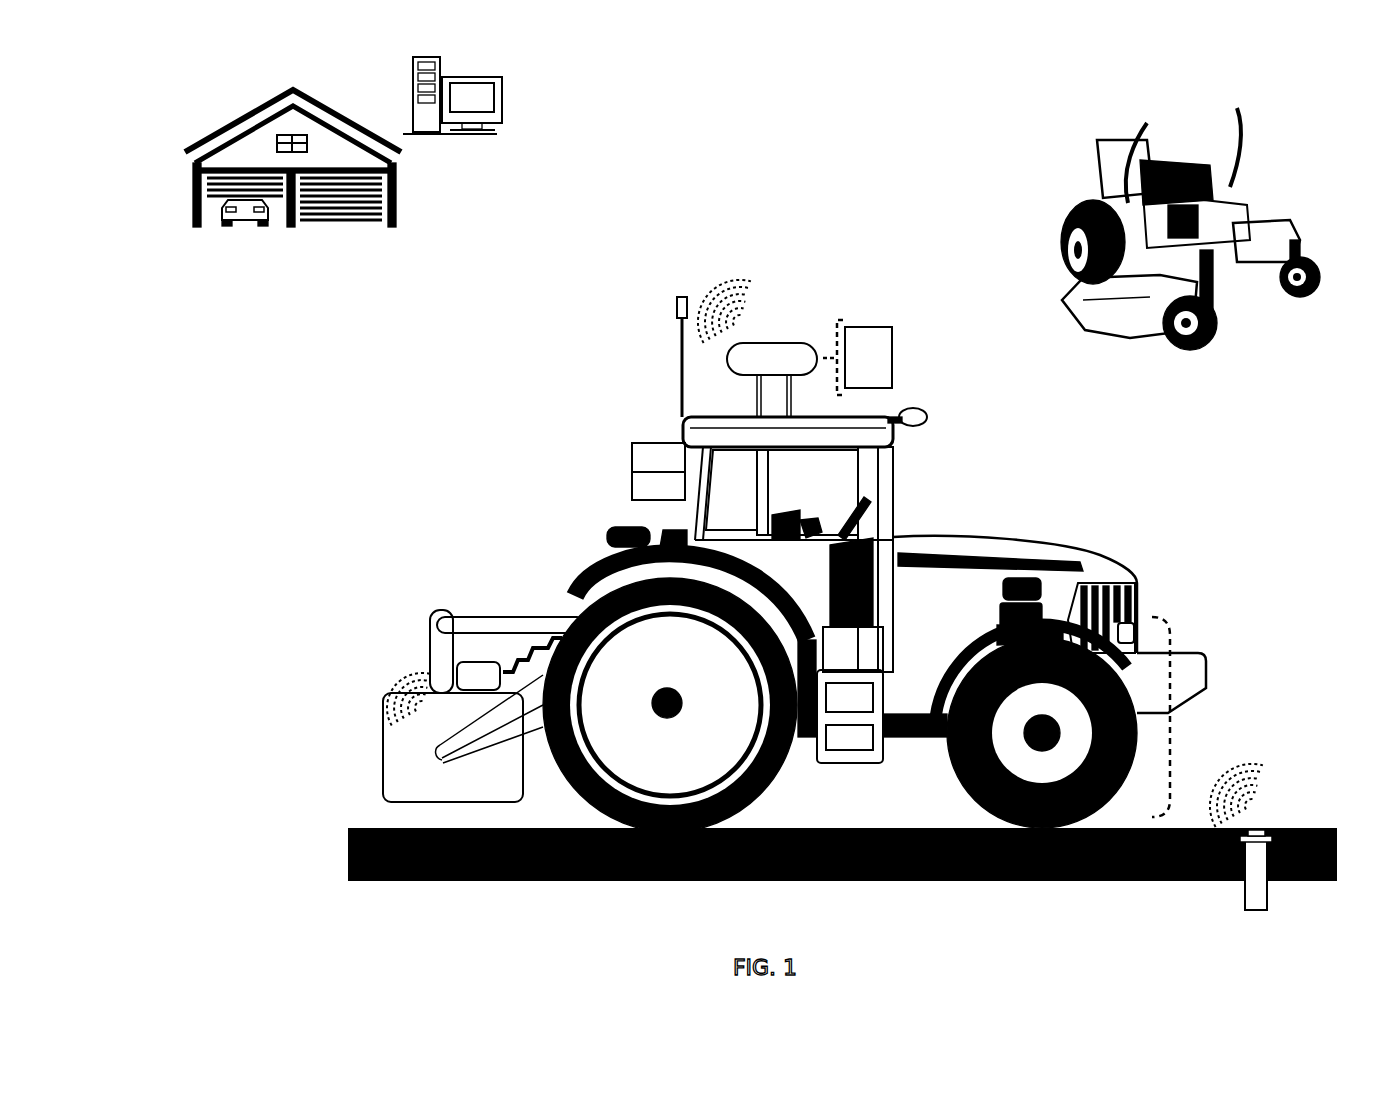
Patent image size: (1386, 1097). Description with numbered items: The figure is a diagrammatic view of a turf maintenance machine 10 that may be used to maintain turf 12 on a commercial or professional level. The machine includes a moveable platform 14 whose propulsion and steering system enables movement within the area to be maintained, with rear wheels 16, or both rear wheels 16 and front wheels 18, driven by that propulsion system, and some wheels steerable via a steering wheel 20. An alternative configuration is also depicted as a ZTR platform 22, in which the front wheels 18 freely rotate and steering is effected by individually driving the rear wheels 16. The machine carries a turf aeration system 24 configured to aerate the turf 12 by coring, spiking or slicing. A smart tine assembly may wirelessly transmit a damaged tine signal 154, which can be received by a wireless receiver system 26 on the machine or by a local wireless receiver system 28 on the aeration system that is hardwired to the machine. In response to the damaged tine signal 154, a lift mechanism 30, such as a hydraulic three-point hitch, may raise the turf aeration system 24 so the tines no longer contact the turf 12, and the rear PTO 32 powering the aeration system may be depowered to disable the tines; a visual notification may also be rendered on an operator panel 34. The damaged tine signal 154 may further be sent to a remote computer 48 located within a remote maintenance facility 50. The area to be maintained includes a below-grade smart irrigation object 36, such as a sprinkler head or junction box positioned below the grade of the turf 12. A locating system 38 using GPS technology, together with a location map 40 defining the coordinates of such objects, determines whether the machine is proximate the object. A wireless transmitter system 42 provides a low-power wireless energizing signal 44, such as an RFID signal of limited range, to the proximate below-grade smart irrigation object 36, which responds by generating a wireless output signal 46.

The turf maintenance machine 10 is at (331, 345).
The turf 12 is at (1336, 863).
The moveable platform 14 is at (1173, 717).
The rear wheels 16 is at (1062, 220).
The front wheels 18 is at (1325, 290).
The steering wheel 20 is at (813, 517).
The ZTR platform 22 is at (1325, 150).
The turf aeration system 24 is at (484, 706).
The wireless receiver system 26 is at (658, 457).
The wireless receiver system 28 is at (478, 676).
The lift mechanism 30 is at (437, 757).
The rear PTO 32 is at (523, 693).
The operator panel 34 is at (843, 517).
The below-grade smart irrigation object 36 is at (1257, 897).
The locating system 38 is at (772, 380).
The location map 40 is at (857, 357).
The wireless transmitter system 42 is at (658, 486).
The wireless energizing signal 44 is at (747, 303).
The wireless output signal 46 is at (1250, 787).
The remote computer 48 is at (496, 110).
The remote maintenance facility 50 is at (398, 193).
The damaged tine signal 154 is at (380, 700).